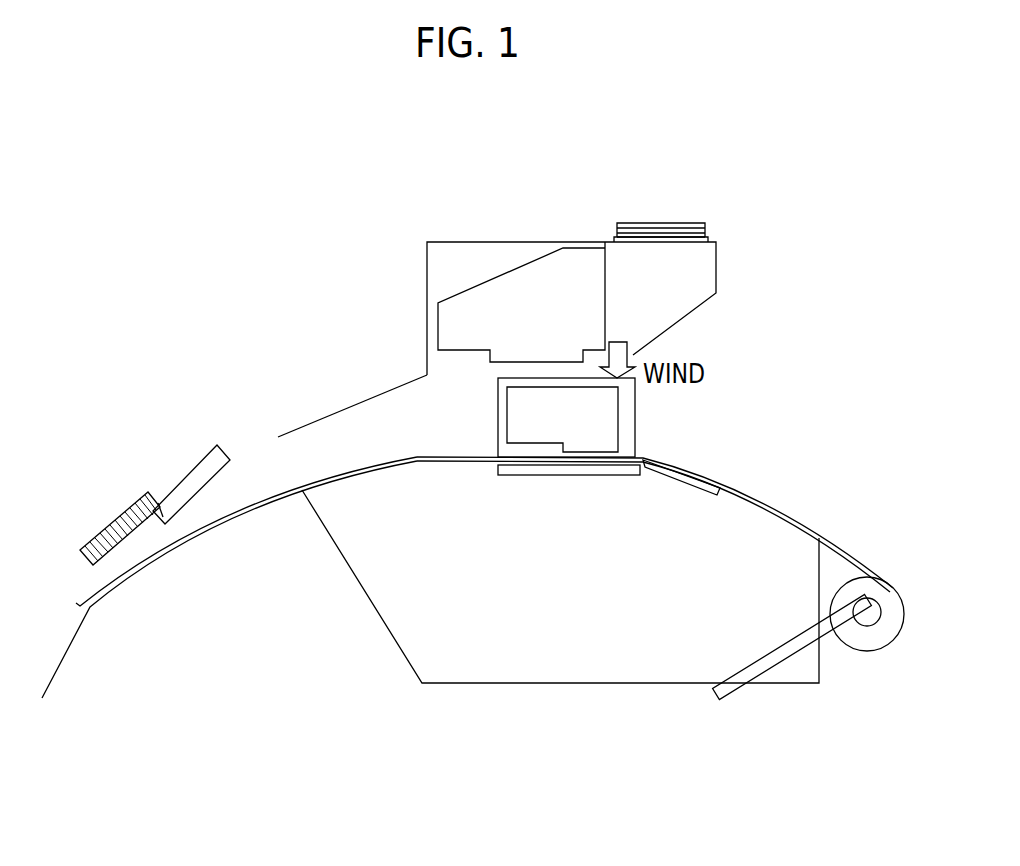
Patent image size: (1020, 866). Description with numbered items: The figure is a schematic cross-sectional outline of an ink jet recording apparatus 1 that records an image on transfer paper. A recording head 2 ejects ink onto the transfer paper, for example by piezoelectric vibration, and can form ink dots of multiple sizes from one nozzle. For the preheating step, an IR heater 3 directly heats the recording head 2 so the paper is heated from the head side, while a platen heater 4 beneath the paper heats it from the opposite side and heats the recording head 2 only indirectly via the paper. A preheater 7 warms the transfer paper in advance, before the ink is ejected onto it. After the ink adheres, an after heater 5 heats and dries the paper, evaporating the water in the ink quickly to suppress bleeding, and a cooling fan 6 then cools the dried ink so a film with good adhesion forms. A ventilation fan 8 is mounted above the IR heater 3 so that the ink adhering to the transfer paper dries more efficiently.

The recording apparatus 1 is at (875, 550).
The recording head 2 is at (623, 448).
The IR heater 3 is at (490, 361).
The platen heater 4 is at (573, 476).
The after heater 5 is at (181, 478).
The cooling fan 6 is at (116, 518).
The preheater 7 is at (685, 484).
The ventilation fan 8 is at (663, 224).